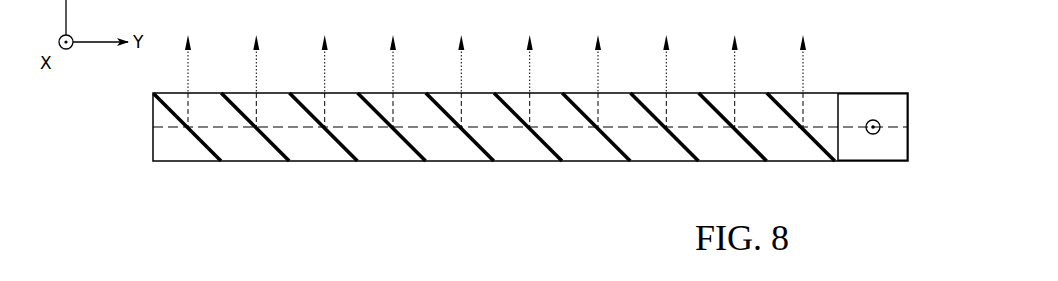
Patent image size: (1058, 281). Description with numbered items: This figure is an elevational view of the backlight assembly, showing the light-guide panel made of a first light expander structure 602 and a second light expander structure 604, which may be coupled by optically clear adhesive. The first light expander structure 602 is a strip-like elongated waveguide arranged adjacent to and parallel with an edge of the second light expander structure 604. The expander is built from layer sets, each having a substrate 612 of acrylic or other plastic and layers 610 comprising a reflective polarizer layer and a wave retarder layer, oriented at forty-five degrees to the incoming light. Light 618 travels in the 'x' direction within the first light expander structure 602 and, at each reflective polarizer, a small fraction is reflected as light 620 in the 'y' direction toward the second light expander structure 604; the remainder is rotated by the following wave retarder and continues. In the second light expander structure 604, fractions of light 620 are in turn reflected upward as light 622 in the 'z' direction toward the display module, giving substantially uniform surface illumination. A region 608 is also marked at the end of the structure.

The first light expander structure 602 is at (882, 72).
The second light expander structure 604 is at (330, 183).
The end region 608 is at (892, 142).
The layers 610 is at (538, 142).
The substrate 612 is at (588, 145).
The light 618 is at (881, 125).
The light 620 is at (698, 128).
The light 622 is at (530, 68).